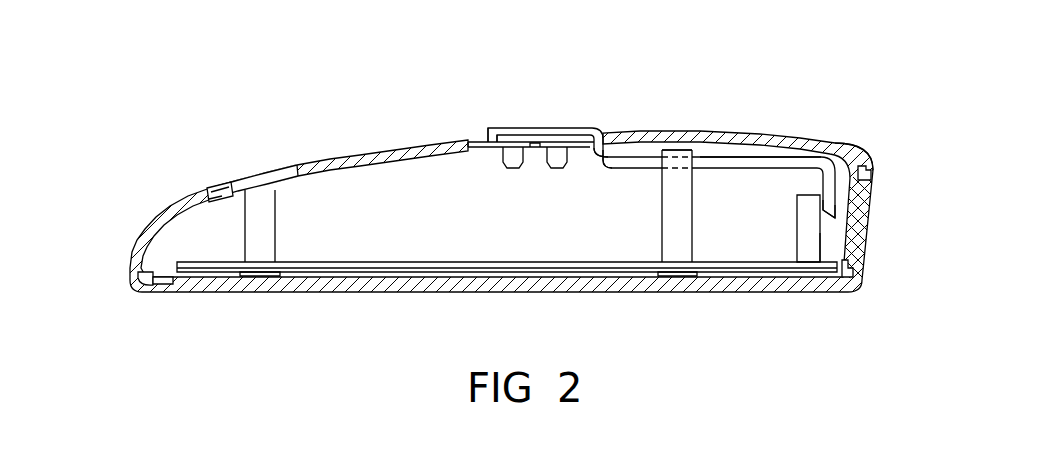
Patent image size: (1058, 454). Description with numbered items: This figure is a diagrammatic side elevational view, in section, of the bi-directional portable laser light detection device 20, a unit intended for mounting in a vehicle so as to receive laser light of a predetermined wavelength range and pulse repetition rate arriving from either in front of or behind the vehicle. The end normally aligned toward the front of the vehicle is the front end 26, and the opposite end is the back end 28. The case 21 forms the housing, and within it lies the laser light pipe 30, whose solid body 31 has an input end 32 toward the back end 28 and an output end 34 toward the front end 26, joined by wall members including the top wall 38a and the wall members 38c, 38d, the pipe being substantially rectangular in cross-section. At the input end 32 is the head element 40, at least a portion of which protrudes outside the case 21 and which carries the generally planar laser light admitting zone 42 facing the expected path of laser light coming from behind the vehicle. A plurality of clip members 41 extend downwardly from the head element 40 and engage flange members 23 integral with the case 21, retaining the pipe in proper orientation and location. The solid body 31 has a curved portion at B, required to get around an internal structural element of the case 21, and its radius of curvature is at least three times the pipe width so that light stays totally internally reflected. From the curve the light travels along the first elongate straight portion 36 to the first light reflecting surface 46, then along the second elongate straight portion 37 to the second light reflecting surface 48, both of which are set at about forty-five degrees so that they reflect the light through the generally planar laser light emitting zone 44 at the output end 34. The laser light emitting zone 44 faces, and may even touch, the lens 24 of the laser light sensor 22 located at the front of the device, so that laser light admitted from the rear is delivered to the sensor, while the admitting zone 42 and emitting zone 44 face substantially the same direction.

The laser light detection device 20 is at (498, 199).
The case 21 is at (498, 199).
The laser light sensor 22 is at (797, 233).
The flange members 23 is at (497, 146).
The lens 24 is at (825, 233).
The front end 26 is at (866, 283).
The back end 28 is at (132, 247).
The laser light pipe 30 is at (605, 200).
The solid body 31 is at (590, 168).
The input end 32 is at (487, 132).
The output end 34 is at (838, 212).
The first elongate straight portion 36 is at (763, 158).
The second elongate straight portion 37 is at (828, 212).
The top wall 38a is at (636, 157).
The wall member 38c is at (642, 170).
The wall member 38d is at (742, 168).
The head element 40 is at (548, 128).
The clip members 41 is at (558, 170).
The laser light admitting zone 42 is at (482, 136).
The laser light emitting zone 44 is at (830, 218).
The first light reflecting surface 46 is at (843, 147).
The second light reflecting surface 48 is at (830, 218).
The curved portion B is at (678, 157).